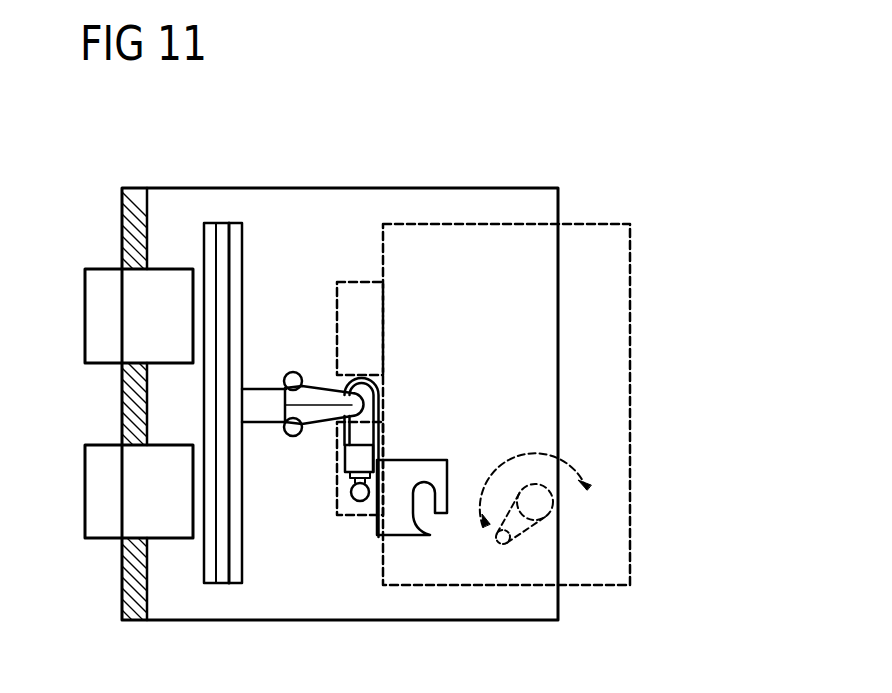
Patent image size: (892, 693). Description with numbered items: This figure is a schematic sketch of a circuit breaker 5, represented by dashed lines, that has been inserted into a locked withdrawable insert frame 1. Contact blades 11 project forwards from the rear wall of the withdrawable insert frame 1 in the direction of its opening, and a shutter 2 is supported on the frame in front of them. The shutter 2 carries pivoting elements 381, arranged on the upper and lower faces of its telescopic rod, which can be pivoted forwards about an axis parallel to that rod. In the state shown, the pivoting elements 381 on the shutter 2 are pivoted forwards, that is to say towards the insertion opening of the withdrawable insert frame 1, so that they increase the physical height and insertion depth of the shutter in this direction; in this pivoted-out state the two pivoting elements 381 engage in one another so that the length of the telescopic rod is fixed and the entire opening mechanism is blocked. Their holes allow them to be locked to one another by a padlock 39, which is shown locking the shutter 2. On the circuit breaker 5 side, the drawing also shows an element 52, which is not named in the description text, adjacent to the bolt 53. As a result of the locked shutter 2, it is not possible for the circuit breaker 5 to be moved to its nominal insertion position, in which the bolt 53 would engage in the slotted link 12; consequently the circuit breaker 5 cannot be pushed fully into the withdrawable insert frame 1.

The withdrawable insert frame 1 is at (353, 198).
The shutter 2 is at (225, 228).
The circuit breaker 5 is at (594, 236).
The contact blades 11 is at (122, 321).
The slotted link 12 is at (433, 475).
The padlock 39 is at (362, 455).
The lever 52 is at (528, 543).
The bolt 53 is at (497, 539).
The pivoting element 381 is at (293, 373).